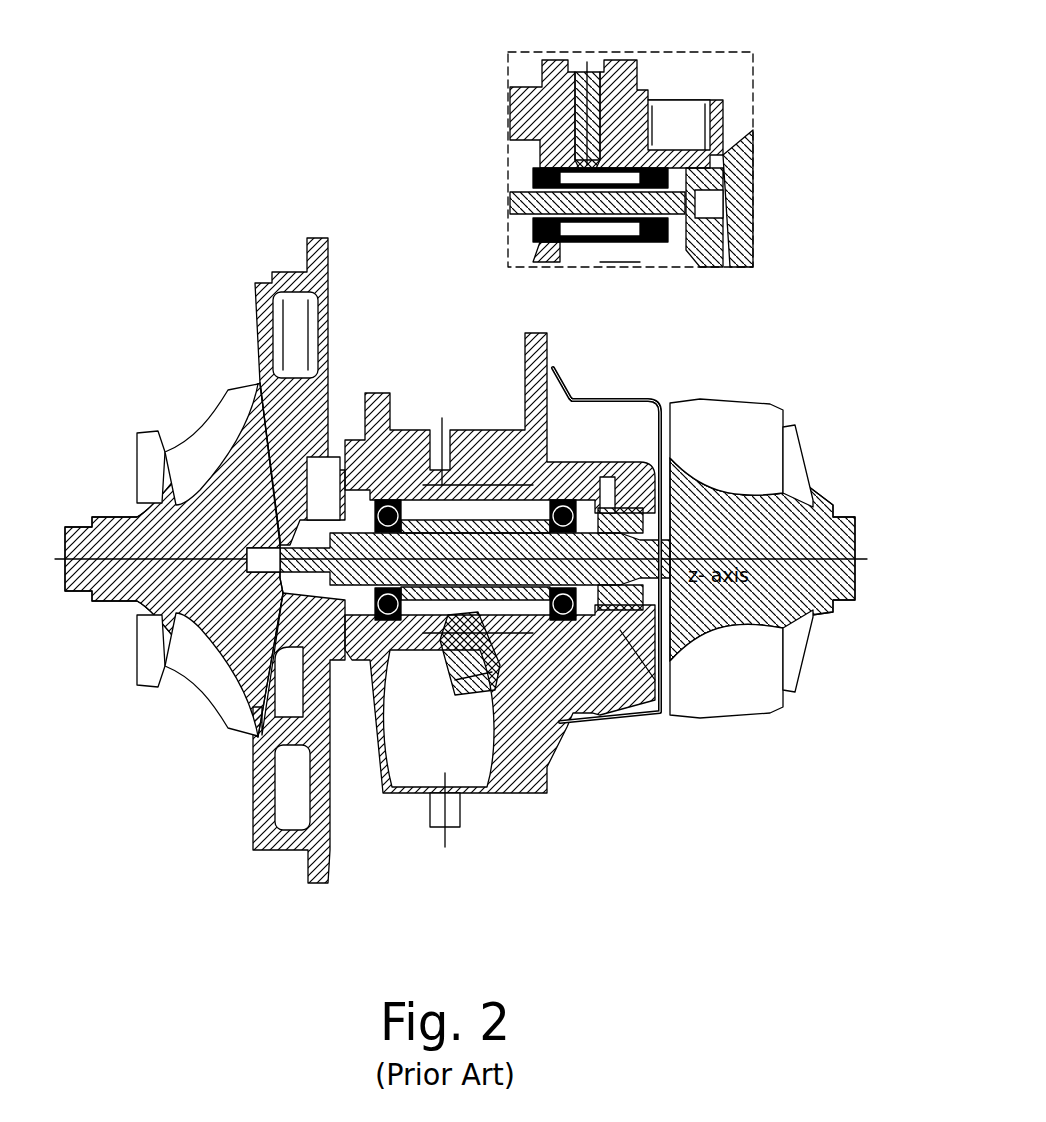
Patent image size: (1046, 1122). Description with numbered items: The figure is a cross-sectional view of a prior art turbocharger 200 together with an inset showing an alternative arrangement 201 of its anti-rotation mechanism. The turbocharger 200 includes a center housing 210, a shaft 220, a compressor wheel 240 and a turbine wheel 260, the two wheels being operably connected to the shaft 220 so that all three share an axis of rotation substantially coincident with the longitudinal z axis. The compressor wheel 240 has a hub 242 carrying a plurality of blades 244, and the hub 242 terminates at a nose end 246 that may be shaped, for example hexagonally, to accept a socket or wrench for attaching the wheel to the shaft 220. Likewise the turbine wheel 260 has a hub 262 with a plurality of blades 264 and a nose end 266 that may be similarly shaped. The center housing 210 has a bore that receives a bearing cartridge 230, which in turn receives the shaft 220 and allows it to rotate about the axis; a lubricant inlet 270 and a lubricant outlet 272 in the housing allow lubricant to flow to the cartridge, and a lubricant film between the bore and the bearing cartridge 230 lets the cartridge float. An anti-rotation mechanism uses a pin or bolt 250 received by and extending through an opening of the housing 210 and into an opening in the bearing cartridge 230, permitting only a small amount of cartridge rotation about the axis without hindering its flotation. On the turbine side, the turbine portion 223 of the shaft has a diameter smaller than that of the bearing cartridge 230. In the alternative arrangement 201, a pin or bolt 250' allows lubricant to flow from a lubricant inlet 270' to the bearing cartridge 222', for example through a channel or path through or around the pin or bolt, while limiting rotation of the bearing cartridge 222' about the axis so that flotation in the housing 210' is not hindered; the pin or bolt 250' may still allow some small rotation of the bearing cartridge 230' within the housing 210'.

The turbocharger 200 is at (232, 209).
The alternative arrangement 201 is at (468, 70).
The center housing 210 is at (500, 563).
The shaft 220 is at (537, 567).
The turbine portion 223 is at (648, 552).
The bearing cartridge 230 is at (629, 560).
The compressor wheel 240 is at (180, 390).
The hub 242 is at (198, 548).
The blades 244 is at (222, 467).
The nose end 246 is at (88, 600).
The pin or bolt 250 is at (448, 672).
The turbine wheel 260 is at (753, 380).
The hub 262 is at (740, 544).
The blades 264 is at (753, 464).
The nose end 266 is at (842, 615).
The lubricant inlet 270 is at (474, 438).
The lubricant outlet 272 is at (442, 826).
The housing 210' is at (616, 114).
The bearing cartridge 222' is at (597, 205).
The bearing cartridge 230' is at (645, 220).
The pin or bolt 250' is at (550, 99).
The lubricant inlet 270' is at (630, 42).